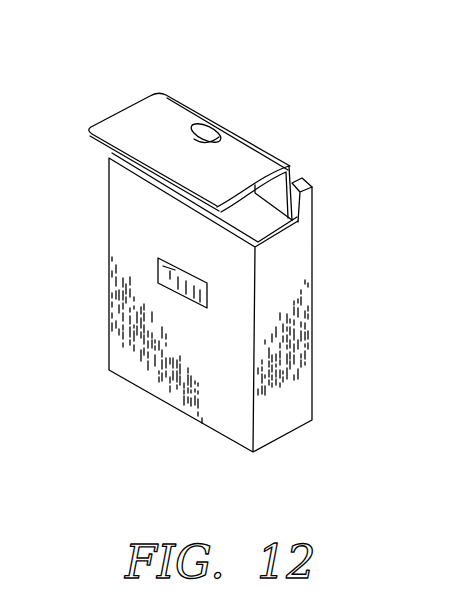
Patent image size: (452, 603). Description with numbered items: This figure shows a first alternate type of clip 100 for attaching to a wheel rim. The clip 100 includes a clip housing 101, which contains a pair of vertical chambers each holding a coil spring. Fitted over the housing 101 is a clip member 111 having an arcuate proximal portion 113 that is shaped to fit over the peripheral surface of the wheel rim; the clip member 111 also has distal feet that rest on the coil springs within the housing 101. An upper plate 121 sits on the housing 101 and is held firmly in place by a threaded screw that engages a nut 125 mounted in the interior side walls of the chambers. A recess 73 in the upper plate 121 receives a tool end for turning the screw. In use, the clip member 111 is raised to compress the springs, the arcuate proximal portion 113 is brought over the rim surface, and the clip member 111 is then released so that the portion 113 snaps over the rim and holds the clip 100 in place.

The clip 100 is at (231, 246).
The clip housing 101 is at (302, 263).
The clip member 111 is at (261, 121).
The arcuate proximal portion 113 is at (229, 158).
The upper plate 121 is at (257, 220).
The nut 125 is at (172, 273).
The recess 73 is at (206, 125).